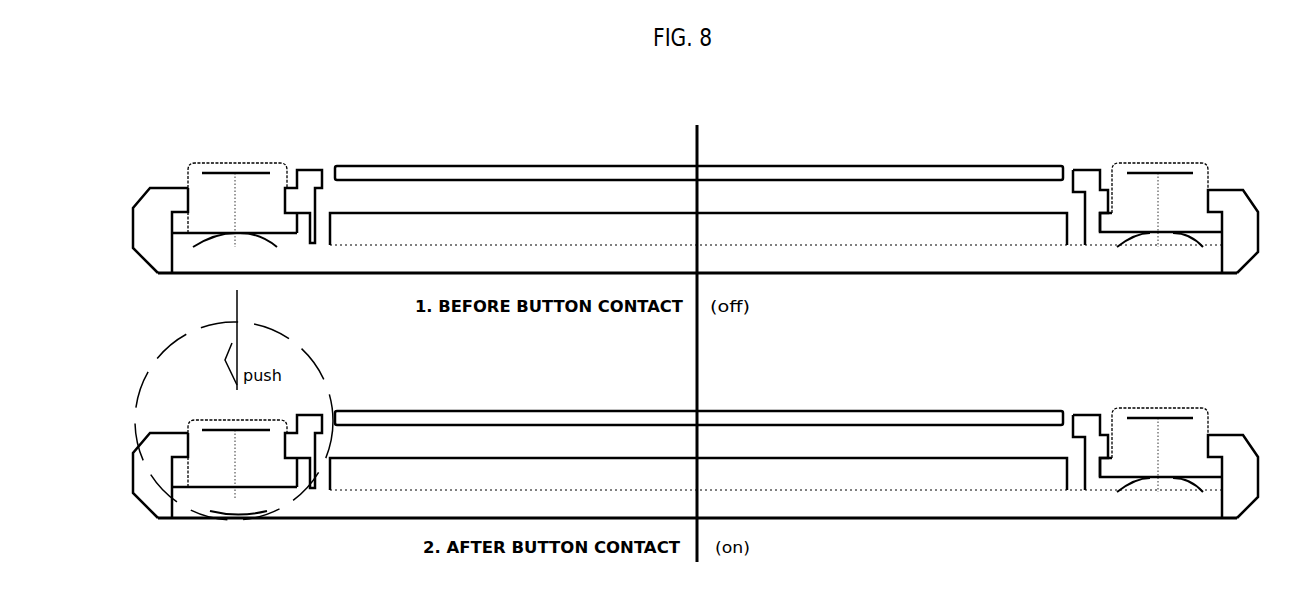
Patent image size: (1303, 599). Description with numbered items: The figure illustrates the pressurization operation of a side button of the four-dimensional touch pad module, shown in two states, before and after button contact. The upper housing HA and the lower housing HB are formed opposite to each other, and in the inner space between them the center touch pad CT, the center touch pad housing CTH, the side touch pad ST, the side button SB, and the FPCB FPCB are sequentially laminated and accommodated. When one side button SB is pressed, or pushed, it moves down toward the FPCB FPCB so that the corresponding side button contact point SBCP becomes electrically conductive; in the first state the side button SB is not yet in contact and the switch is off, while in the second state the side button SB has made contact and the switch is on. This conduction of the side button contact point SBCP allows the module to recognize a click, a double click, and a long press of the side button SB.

The side touch pad ST is at (229, 163).
The side button SB is at (262, 197).
The center touch pad CT is at (520, 166).
The center touch pad housing CTH is at (780, 190).
The upper housing HA is at (1087, 183).
The lower housing HB is at (1100, 263).
The side button contact point SBCP is at (247, 238).
The element FPCB is at (953, 243).